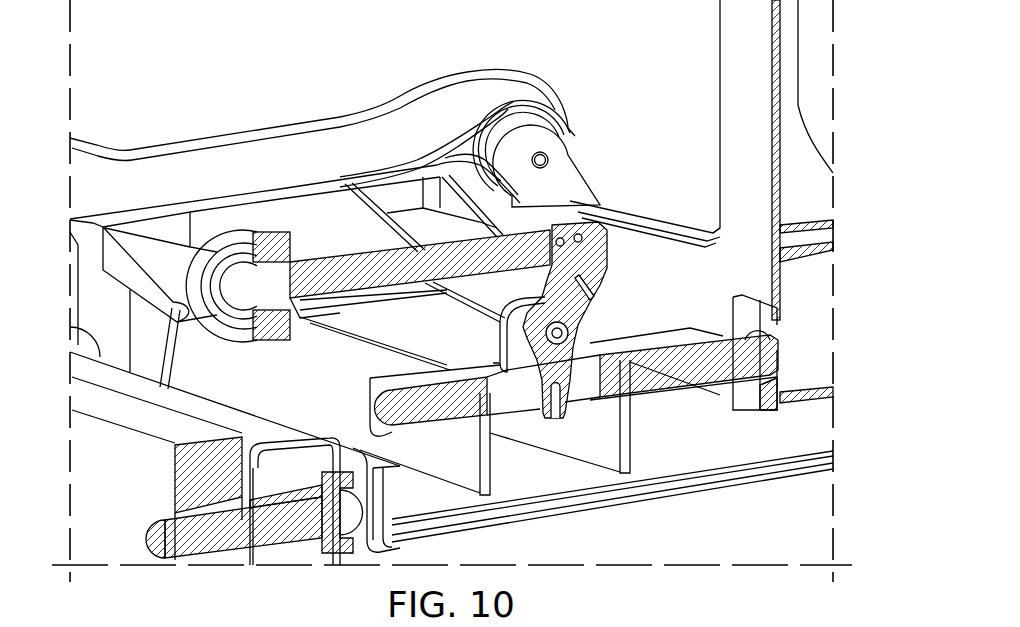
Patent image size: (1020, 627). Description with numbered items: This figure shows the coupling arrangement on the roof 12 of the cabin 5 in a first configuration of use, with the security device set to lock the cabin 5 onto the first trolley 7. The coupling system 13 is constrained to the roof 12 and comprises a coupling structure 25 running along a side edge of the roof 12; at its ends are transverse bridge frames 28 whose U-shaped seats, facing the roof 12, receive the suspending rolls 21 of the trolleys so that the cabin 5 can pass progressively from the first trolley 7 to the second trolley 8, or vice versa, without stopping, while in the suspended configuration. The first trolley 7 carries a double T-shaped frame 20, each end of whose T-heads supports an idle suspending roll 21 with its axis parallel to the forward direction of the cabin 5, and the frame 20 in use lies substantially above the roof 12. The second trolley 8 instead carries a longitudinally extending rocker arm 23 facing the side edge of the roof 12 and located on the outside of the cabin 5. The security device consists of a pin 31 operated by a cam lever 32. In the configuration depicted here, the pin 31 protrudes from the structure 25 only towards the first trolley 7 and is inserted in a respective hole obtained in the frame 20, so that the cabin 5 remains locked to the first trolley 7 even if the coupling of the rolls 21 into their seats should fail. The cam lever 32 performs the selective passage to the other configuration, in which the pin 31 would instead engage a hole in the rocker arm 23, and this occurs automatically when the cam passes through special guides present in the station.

The cabin 5 is at (816, 527).
The first trolley 7 is at (806, 106).
The second trolley 8 is at (66, 490).
The roof 12 is at (797, 437).
The coupling system 13 is at (592, 126).
The double T-shaped frame 20 is at (638, 222).
The suspending roll 21 is at (541, 103).
The rocker arm 23 is at (342, 565).
The coupling structure 25 is at (487, 452).
The transverse bridge frame 28 is at (275, 128).
The pin 31 is at (697, 377).
The cam lever 32 is at (343, 268).